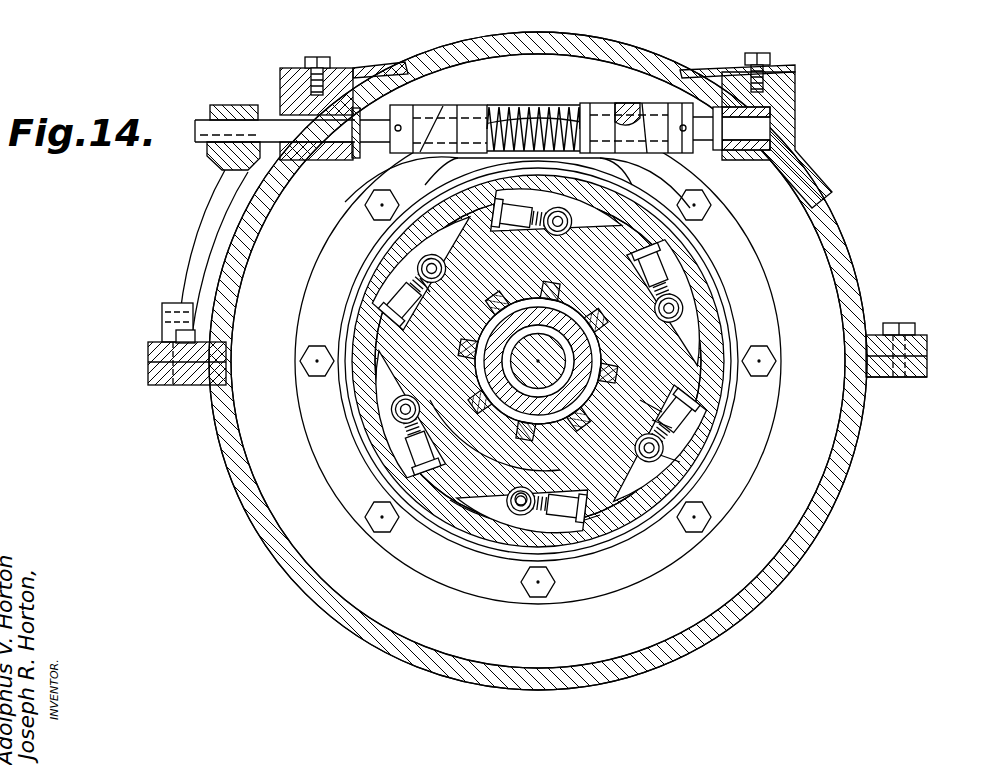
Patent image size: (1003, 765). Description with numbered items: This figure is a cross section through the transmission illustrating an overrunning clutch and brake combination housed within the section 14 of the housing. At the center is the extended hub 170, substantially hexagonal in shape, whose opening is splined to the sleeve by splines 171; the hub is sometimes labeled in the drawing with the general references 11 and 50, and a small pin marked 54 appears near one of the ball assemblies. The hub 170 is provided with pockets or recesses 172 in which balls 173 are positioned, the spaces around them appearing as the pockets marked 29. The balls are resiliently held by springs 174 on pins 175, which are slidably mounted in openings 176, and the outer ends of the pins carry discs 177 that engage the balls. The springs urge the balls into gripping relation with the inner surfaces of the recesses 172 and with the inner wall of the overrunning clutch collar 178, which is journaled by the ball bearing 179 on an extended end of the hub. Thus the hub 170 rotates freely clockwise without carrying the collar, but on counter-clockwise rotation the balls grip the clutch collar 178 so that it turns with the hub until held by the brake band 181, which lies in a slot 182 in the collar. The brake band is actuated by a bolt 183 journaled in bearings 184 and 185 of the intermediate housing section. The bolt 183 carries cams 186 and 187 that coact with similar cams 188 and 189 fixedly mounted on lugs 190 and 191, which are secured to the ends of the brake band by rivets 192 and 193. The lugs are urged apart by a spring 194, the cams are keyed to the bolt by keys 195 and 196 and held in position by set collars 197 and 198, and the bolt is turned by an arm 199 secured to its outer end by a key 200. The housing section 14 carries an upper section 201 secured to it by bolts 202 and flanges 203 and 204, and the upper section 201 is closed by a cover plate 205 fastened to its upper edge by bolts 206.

The driving member 11 is at (460, 370).
The section of the housing 14 is at (800, 552).
The pocket 29 is at (673, 305).
The cage 50 is at (595, 455).
The pin 54 is at (506, 495).
The extended hub 170 is at (635, 500).
The splines 171 is at (505, 495).
The pockets or recesses 172 is at (575, 228).
The balls 173 is at (400, 412).
The springs 174 is at (665, 425).
The pins 175 is at (655, 403).
The openings 176 is at (660, 385).
The discs 177 is at (420, 270).
The overrunning clutch collar 178 is at (360, 300).
The ball bearing 179 is at (675, 460).
The brake band 181 is at (720, 291).
The slot 182 is at (625, 158).
The bolt 183 is at (423, 108).
The bearing 184 is at (280, 85).
The bearing 185 is at (778, 100).
The cam 186 is at (470, 100).
The cam 187 is at (672, 100).
The cam 188 is at (478, 98).
The cam 189 is at (618, 100).
The lug 190 is at (470, 86).
The lug 191 is at (592, 108).
The rivet 192 is at (416, 176).
The rivet 193 is at (690, 181).
The spring 194 is at (532, 106).
The key 195 is at (378, 162).
The key 196 is at (642, 96).
The set collar 197 is at (330, 171).
The set collar 198 is at (690, 150).
The arm 199 is at (178, 245).
The key 200 is at (208, 144).
The upper section 201 is at (856, 240).
The bolts 202 is at (176, 338).
The flange 203 is at (927, 337).
The flange 204 is at (927, 372).
The cover plate 205 is at (378, 58).
The bolts 206 is at (320, 57).